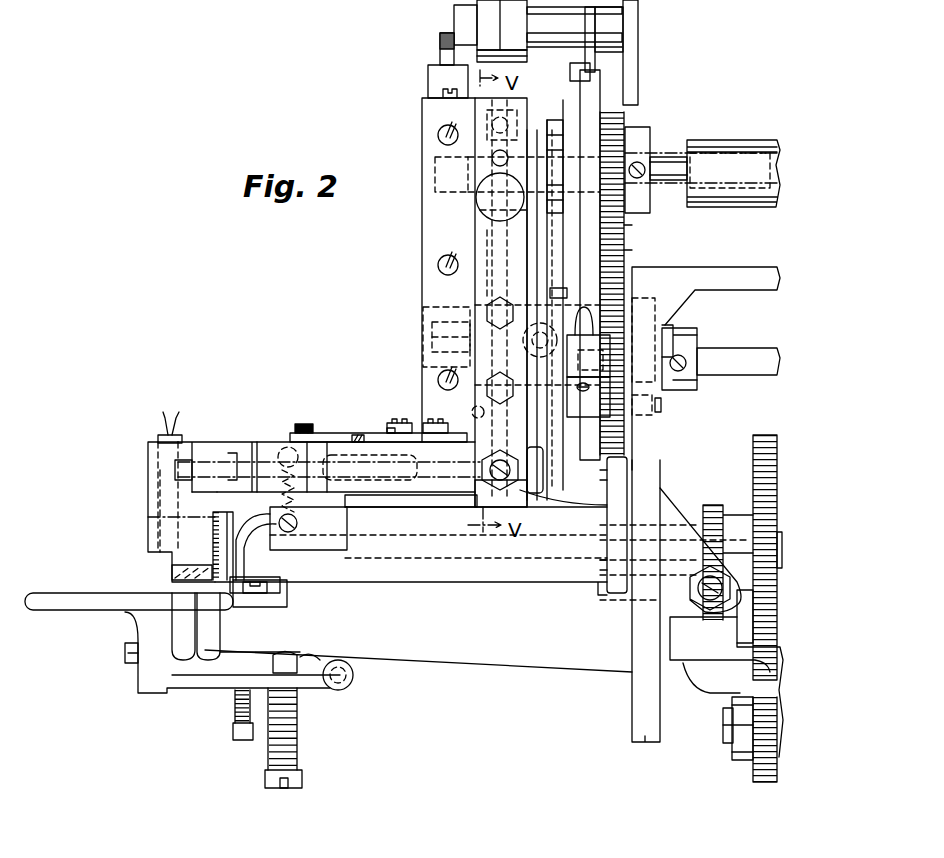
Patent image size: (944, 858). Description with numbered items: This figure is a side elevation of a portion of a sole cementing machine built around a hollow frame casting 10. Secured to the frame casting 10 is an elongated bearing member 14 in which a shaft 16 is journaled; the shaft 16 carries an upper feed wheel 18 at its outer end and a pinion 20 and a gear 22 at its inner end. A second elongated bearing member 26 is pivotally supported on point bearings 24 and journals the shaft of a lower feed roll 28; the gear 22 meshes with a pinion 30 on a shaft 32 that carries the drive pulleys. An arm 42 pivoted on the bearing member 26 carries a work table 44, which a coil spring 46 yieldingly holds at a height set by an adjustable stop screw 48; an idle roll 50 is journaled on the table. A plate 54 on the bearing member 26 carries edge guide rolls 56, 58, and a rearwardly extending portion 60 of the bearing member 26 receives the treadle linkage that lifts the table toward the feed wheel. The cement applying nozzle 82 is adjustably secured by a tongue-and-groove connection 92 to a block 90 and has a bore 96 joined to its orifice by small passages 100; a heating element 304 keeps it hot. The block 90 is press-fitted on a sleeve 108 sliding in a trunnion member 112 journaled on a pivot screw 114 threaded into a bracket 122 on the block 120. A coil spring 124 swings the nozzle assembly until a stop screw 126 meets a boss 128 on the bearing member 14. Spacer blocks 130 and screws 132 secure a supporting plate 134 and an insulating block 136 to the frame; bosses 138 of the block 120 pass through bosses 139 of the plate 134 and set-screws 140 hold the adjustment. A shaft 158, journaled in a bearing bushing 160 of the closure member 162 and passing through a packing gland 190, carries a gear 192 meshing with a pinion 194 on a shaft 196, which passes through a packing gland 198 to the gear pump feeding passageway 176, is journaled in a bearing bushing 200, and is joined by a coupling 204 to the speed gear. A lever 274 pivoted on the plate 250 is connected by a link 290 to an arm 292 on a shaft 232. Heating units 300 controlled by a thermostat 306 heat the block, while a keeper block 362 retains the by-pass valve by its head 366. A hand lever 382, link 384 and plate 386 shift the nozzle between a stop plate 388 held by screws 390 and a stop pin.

The frame casting 10 is at (628, 735).
The bearing member 14 is at (413, 583).
The shaft 16 is at (497, 540).
The upper feed wheel 18 is at (218, 513).
The pinion 20 is at (712, 505).
The gear 22 is at (767, 435).
The point bearing 24 is at (710, 600).
The bearing member 26 is at (443, 660).
The lower feed roll 28 is at (216, 660).
The pinion 30 is at (765, 782).
The shaft 32 is at (723, 738).
The arm 42 is at (150, 700).
The work table 44 is at (46, 593).
The coil spring 46 is at (300, 733).
The adjustable stop screw 48 is at (237, 740).
The idle roll 50 is at (183, 660).
The plate 54 is at (270, 607).
The edge guide roll 56 is at (282, 583).
The edge guide roll 58 is at (210, 597).
The rearwardly extending portion 60 is at (706, 693).
The cement applying nozzle 82 is at (147, 473).
The block 90 is at (238, 442).
The tongue-and-groove connection 92 is at (237, 470).
The bore 96 is at (148, 517).
The passages 100 is at (203, 575).
The sleeve 108 is at (320, 433).
The trunnion member 112 is at (530, 492).
The pivot screw 114 is at (528, 505).
The block 120 is at (515, 108).
The bracket 122 is at (473, 398).
The coil spring 124 is at (263, 447).
The stop screw 126 is at (300, 424).
The boss 128 is at (347, 512).
The spacer blocks 130 is at (595, 437).
The screws 132 is at (543, 449).
The supporting plate 134 is at (535, 270).
The insulating block 136 is at (623, 72).
The bosses 138 is at (588, 95).
The bosses 139 is at (552, 287).
The set-screws 140 is at (560, 150).
The shaft 158 is at (432, 335).
The bearing bushing 160 is at (423, 310).
The closure member 162 is at (422, 252).
The passageway 176 is at (487, 243).
The packing gland 190 is at (632, 270).
The gear 192 is at (624, 232).
The pinion 194 is at (624, 118).
The shaft 196 is at (656, 153).
The packing gland 198 is at (553, 255).
The bearing bushing 200 is at (422, 165).
The coupling 204 is at (748, 138).
The shaft 232 is at (757, 348).
The plate 250 is at (641, 25).
The lever 274 is at (527, 50).
The link 290 is at (624, 255).
The arm 292 is at (660, 393).
The electrical heating units 300 is at (438, 135).
The electrical heating element 304 is at (157, 497).
The thermostat 306 is at (428, 80).
The keeper block 362 is at (506, 116).
The head 366 is at (477, 218).
The hand lever 382 is at (390, 433).
The link 384 is at (410, 423).
The plate 386 is at (465, 428).
The stop plate 388 is at (378, 500).
The screws 390 is at (356, 435).